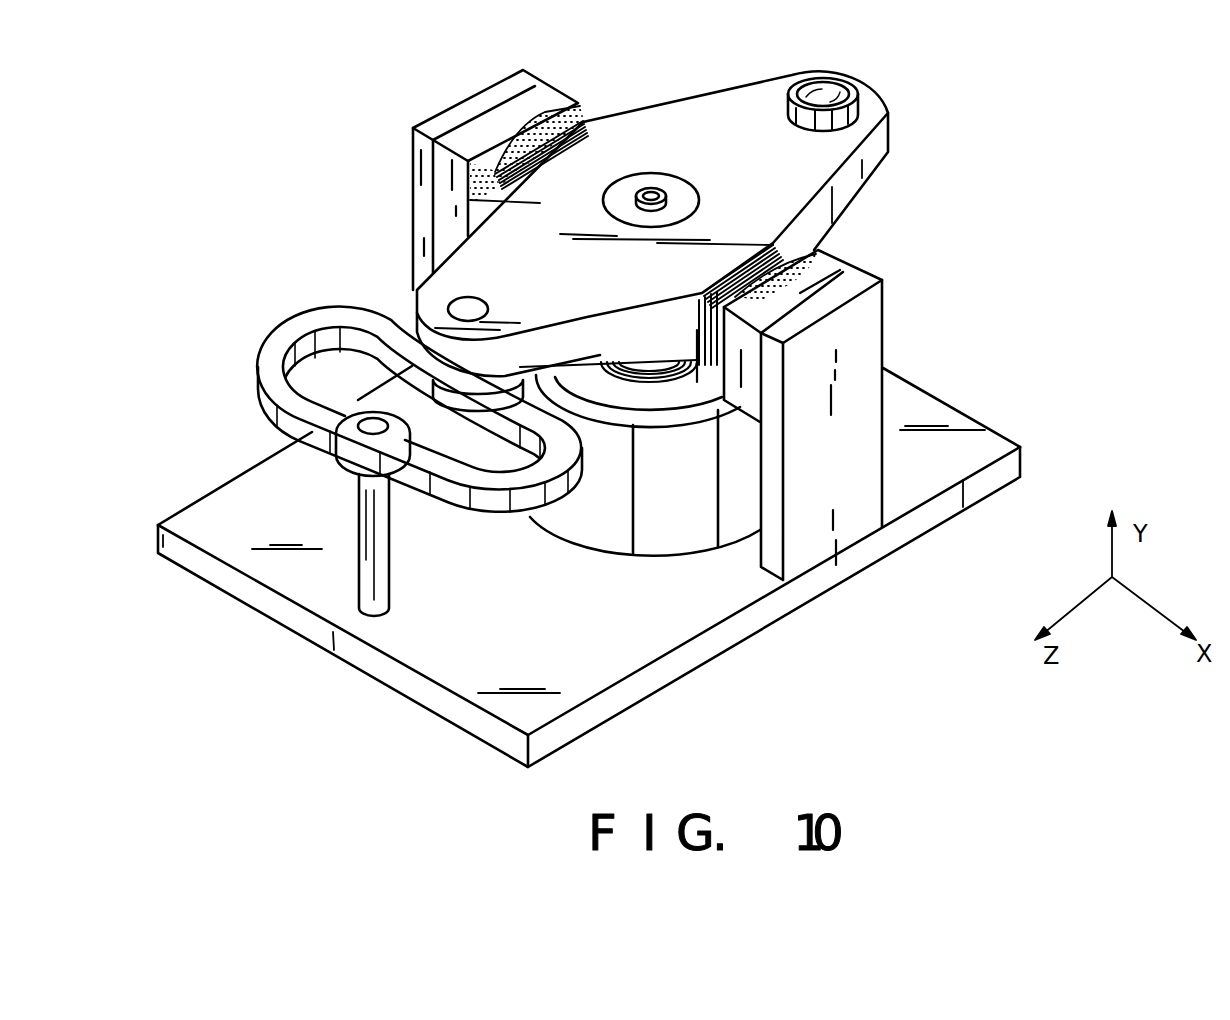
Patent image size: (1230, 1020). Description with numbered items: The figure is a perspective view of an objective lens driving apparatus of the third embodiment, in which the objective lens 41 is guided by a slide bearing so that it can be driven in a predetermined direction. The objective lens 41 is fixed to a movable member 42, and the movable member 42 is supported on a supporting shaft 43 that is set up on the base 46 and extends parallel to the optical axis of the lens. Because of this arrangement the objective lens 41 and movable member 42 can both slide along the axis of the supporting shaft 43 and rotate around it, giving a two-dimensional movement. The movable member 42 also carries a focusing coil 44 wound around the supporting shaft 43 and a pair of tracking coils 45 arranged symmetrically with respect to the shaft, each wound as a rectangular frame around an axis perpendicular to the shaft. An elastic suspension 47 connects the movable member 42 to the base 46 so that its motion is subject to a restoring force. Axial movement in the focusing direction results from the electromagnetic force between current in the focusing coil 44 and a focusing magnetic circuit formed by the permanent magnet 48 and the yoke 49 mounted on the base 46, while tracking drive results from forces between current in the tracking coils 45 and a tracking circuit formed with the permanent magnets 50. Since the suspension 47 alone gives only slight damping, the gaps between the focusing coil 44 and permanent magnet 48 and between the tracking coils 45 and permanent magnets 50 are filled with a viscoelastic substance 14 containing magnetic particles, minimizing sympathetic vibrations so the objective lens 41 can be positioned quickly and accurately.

The viscoelastic substance 14 is at (542, 120).
The objective lens 41 is at (845, 95).
The movable member 42 is at (735, 125).
The supporting shaft 43 is at (657, 194).
The focusing coil 44 is at (680, 382).
The tracking coils 45 is at (583, 120).
The base 46 is at (950, 430).
The elastic suspension 47 is at (310, 323).
The permanent magnet 48 is at (618, 404).
The yoke 49 is at (650, 498).
The permanent magnets 50 is at (500, 118).